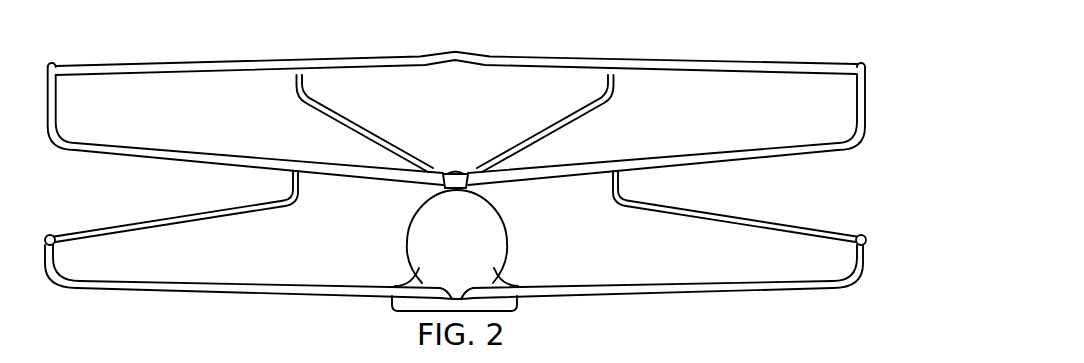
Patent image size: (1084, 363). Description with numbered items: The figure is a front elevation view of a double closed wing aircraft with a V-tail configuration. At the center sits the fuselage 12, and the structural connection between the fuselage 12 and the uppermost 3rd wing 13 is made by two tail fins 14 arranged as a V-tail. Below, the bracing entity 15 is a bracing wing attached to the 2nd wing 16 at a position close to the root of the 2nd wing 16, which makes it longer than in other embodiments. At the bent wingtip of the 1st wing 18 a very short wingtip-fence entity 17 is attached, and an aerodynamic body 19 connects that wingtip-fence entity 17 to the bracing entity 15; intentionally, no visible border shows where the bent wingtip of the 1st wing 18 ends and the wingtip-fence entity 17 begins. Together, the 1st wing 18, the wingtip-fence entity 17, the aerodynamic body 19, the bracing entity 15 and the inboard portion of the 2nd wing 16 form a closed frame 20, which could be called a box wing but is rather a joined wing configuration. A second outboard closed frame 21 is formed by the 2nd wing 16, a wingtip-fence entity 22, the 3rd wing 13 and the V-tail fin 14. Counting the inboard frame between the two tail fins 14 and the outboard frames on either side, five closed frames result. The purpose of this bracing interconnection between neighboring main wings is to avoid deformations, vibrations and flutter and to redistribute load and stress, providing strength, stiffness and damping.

The fuselage 12 is at (427, 237).
The 3rd wing 13 is at (687, 68).
The tail fins 14 is at (558, 127).
The bracing entity 15 is at (688, 213).
The 2nd wing 16 is at (662, 160).
The wingtip-fence entity 17 is at (858, 250).
The 1st wing 18 is at (623, 287).
The aerodynamic body 19 is at (866, 236).
The closed frame 20 is at (887, 258).
The closed frame 21 is at (887, 104).
The wingtip-fence entity 22 is at (857, 84).